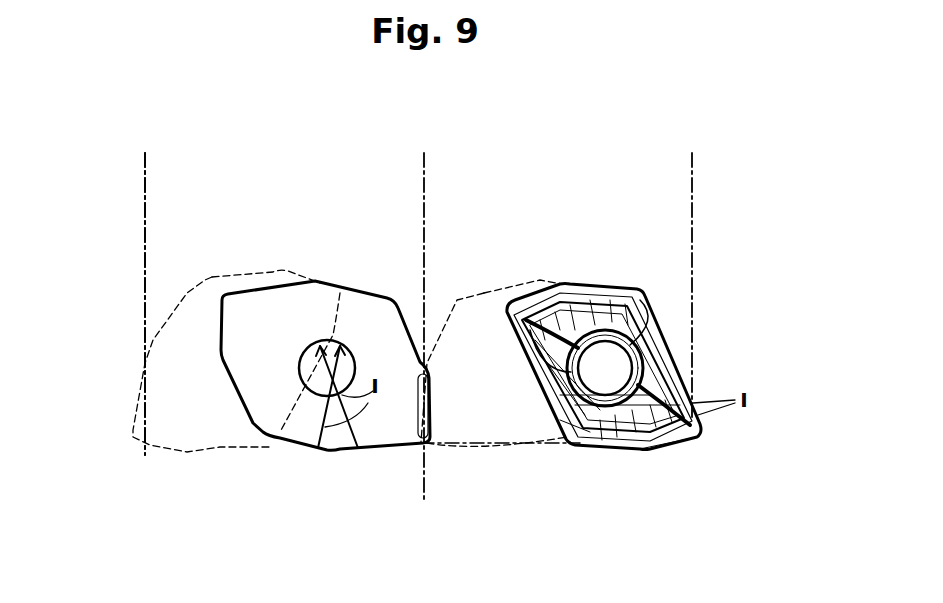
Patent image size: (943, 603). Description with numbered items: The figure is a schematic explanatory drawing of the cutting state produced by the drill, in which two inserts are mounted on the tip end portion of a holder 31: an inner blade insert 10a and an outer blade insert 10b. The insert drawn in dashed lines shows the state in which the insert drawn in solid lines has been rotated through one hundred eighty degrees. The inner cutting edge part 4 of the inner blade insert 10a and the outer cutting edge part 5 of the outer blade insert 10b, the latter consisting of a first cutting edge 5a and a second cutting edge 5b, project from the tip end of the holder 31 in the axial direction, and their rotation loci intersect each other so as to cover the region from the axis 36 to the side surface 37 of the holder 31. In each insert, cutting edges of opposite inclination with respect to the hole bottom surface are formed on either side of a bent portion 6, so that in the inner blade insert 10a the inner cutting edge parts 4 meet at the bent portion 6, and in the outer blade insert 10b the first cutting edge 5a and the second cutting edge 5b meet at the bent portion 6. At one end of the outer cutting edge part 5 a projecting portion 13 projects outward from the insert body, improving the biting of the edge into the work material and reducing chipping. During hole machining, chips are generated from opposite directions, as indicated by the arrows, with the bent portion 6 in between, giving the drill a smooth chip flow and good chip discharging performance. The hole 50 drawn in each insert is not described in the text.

The inner cutting edge part 4 is at (298, 447).
The outer cutting edge part 5 is at (577, 530).
The first cutting edge 5a is at (667, 450).
The second cutting edge 5b is at (597, 448).
The bent portion 6 is at (342, 452).
The inner blade insert 10a is at (370, 290).
The outer blade insert 10b is at (212, 277).
The projecting portion 13 is at (679, 450).
The holder 31 is at (143, 195).
The axis 36 is at (424, 503).
The side surface 37 is at (421, 304).
The through hole 50 is at (307, 370).